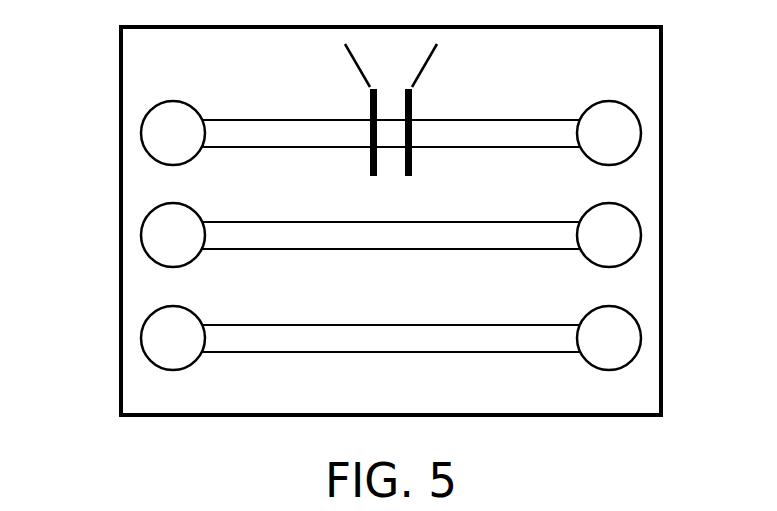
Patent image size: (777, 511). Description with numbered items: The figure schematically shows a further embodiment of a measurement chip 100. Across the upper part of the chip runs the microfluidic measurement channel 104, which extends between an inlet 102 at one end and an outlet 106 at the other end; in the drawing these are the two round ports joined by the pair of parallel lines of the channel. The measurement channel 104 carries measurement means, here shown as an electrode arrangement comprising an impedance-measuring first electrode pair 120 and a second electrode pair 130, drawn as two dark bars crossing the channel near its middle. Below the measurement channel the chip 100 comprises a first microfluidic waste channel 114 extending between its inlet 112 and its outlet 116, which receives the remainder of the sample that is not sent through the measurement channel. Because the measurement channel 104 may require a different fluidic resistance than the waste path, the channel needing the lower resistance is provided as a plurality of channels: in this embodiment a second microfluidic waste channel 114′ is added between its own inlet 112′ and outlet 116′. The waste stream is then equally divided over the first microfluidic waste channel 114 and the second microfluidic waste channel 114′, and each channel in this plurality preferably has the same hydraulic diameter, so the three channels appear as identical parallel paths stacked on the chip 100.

The measurement chip 100 is at (120, 49).
The inlet 102 is at (628, 136).
The microfluidic measurement channel 104 is at (463, 136).
The outlet 106 is at (152, 133).
The inlet 112 is at (630, 232).
The microfluidic waste channel 114 is at (465, 237).
The outlet 116 is at (152, 234).
The inlet 112′ is at (630, 335).
The second microfluidic waste channel 114′ is at (465, 340).
The outlet 116′ is at (152, 337).
The first electrode pair 120 is at (413, 100).
The second electrode pair 130 is at (368, 100).